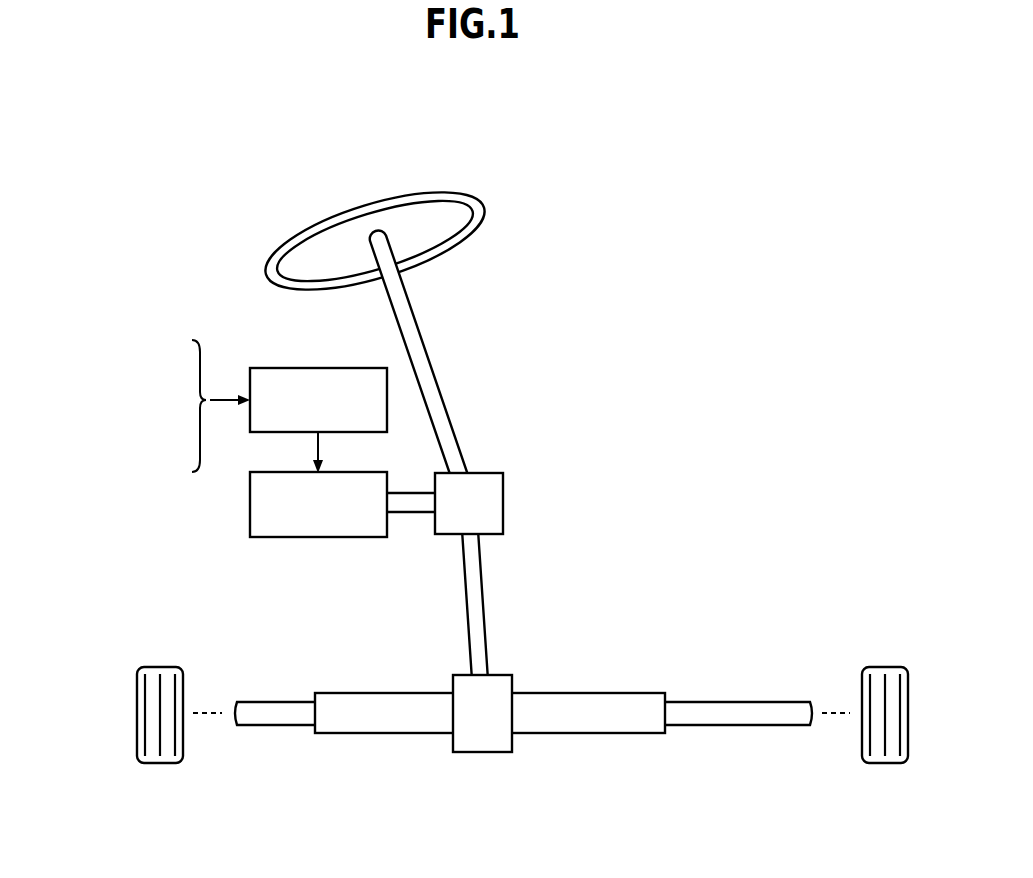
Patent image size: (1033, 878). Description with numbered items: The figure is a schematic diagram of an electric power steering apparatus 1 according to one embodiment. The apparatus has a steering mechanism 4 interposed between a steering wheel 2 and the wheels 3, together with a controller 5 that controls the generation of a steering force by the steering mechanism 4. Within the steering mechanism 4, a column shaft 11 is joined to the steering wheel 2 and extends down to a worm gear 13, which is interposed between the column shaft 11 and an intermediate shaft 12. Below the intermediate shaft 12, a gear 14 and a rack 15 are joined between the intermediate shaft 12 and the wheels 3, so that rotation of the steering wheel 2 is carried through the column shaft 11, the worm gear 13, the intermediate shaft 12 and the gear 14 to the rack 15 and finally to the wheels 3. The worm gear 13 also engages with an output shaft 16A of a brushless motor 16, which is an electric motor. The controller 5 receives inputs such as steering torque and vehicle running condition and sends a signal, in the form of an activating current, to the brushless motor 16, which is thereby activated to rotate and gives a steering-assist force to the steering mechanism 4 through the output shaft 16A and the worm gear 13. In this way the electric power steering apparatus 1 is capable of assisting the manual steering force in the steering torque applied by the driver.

The electric power steering apparatus 1 is at (660, 268).
The steering wheel 2 is at (447, 207).
The wheels 3 is at (162, 764).
The steering mechanism 4 is at (541, 456).
The controller 5 is at (297, 366).
The column shaft 11 is at (420, 357).
The intermediate shaft 12 is at (484, 621).
The worm gear 13 is at (503, 501).
The gear 14 is at (483, 753).
The rack 15 is at (603, 726).
The brushless motor 16 is at (250, 510).
The output shaft 16A is at (410, 513).